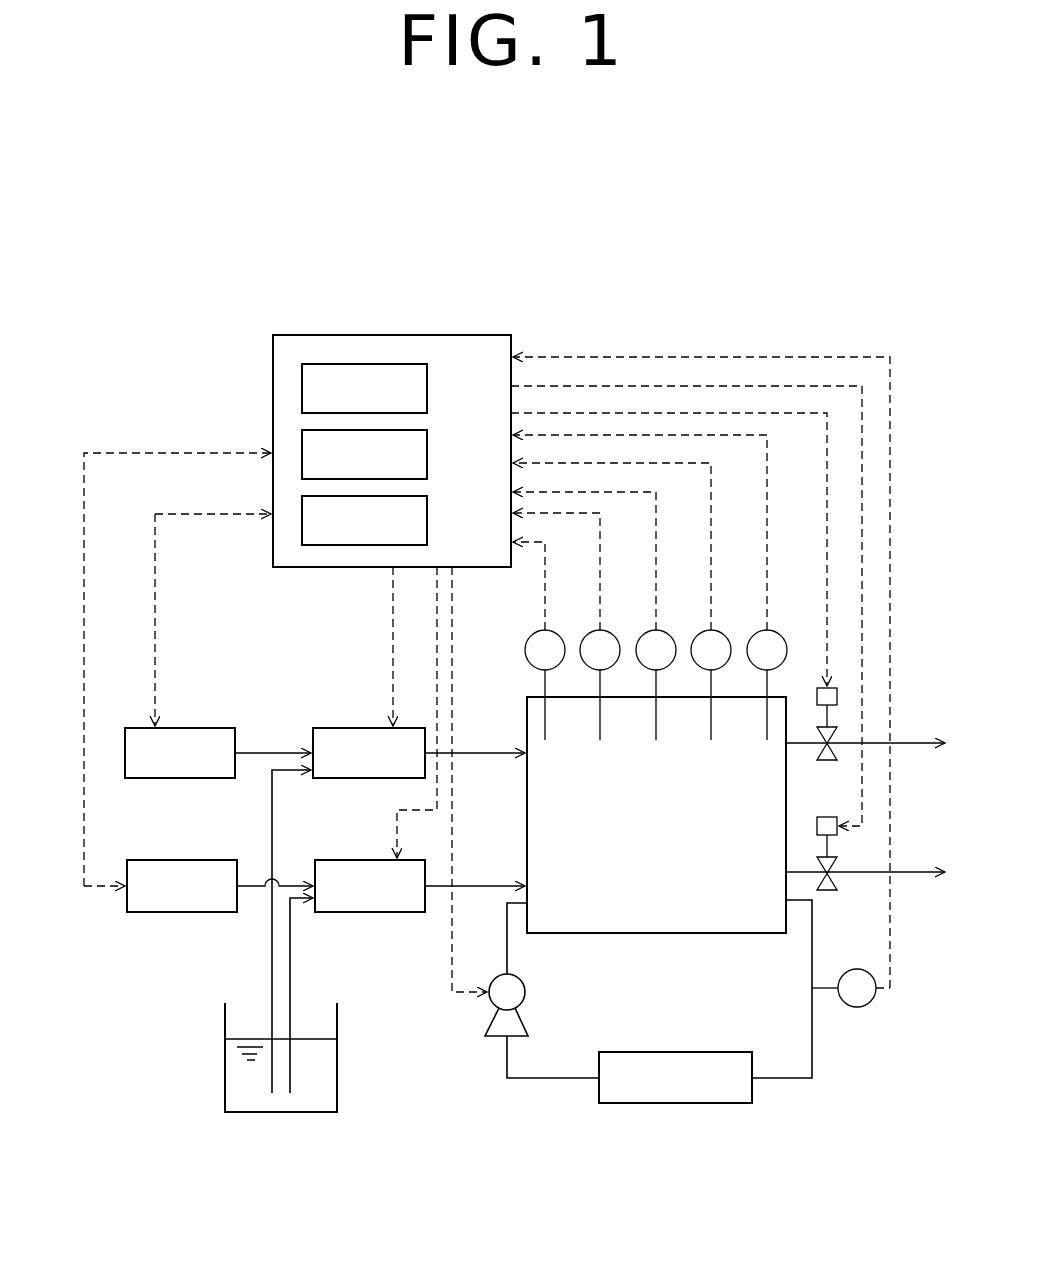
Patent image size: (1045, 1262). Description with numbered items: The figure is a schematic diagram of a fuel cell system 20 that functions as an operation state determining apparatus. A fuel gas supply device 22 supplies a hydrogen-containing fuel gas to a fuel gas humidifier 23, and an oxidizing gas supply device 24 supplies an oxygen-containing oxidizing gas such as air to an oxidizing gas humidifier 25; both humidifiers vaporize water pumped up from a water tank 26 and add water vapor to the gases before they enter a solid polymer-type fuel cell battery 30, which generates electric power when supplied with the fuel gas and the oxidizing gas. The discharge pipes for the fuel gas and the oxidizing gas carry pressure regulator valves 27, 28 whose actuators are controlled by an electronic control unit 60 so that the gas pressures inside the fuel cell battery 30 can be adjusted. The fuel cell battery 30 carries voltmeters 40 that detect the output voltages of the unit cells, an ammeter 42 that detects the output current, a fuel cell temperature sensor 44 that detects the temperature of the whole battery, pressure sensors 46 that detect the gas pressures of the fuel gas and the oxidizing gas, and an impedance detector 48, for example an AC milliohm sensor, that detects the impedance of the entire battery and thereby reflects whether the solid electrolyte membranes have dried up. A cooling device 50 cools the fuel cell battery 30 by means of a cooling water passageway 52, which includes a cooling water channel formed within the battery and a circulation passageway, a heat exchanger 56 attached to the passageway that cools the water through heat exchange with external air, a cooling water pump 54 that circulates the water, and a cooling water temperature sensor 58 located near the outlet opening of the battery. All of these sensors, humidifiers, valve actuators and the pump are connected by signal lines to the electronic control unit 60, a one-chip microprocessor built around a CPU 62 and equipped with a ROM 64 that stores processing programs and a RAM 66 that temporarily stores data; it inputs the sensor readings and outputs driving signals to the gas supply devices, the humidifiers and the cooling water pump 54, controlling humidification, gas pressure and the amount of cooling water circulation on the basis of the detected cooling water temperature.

The fuel cell system 20 is at (565, 314).
The fuel gas supply device 22 is at (208, 728).
The fuel gas humidifier 23 is at (327, 728).
The oxidizing gas supply device 24 is at (208, 860).
The oxidizing gas humidifier 25 is at (328, 860).
The water tank 26 is at (337, 1065).
The pressure regulator valve 27 is at (828, 762).
The pressure regulator valve 28 is at (830, 890).
The fuel cell battery 30 is at (677, 933).
The voltmeters 40 is at (532, 634).
The ammeter 42 is at (587, 634).
The fuel cell temperature sensor 44 is at (643, 634).
The pressure sensors 46 is at (698, 634).
The impedance detector 48 is at (753, 634).
The cooling device 50 is at (704, 1038).
The cooling water passageway 52 is at (812, 1053).
The cooling water pump 54 is at (525, 992).
The heat exchanger 56 is at (688, 1052).
The cooling water temperature sensor 58 is at (857, 1007).
The electronic control unit 60 is at (384, 333).
The CPU 62 is at (427, 386).
The ROM 64 is at (427, 452).
The RAM 66 is at (427, 517).